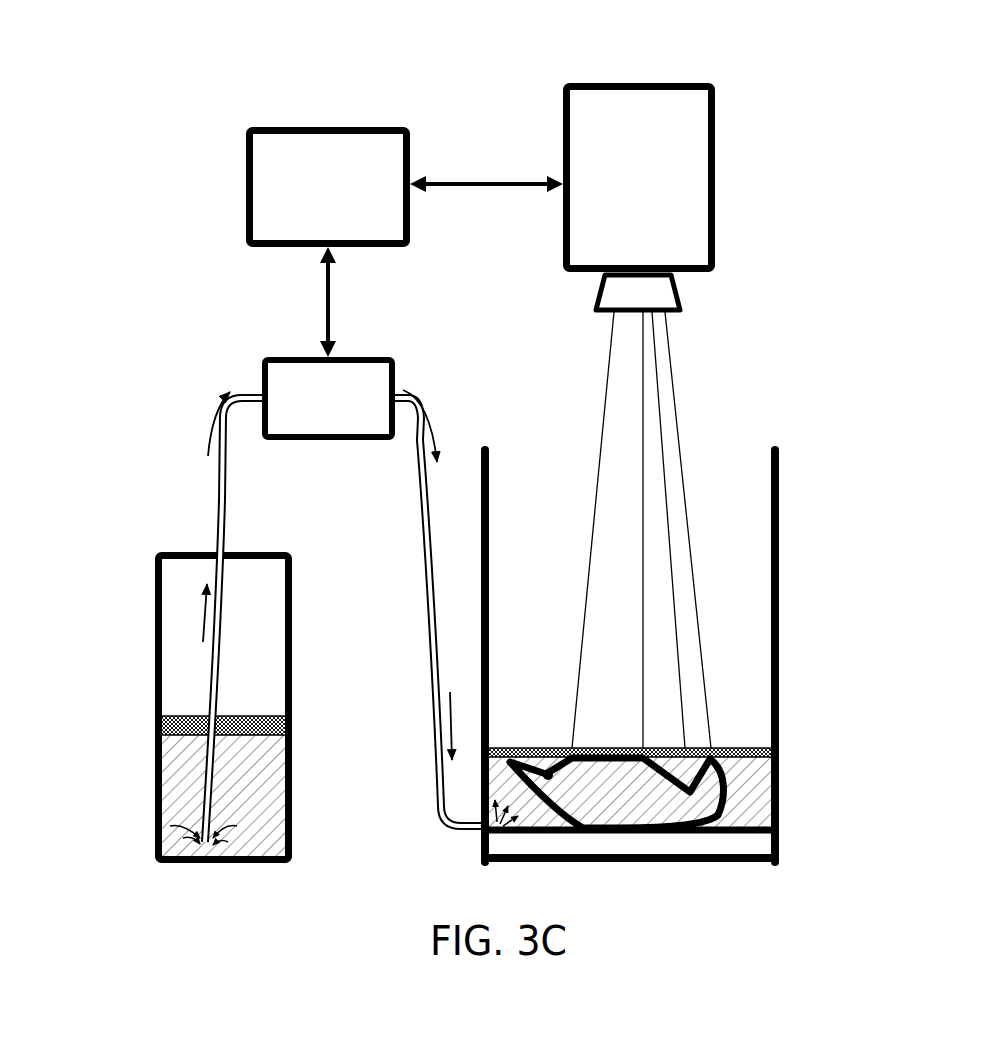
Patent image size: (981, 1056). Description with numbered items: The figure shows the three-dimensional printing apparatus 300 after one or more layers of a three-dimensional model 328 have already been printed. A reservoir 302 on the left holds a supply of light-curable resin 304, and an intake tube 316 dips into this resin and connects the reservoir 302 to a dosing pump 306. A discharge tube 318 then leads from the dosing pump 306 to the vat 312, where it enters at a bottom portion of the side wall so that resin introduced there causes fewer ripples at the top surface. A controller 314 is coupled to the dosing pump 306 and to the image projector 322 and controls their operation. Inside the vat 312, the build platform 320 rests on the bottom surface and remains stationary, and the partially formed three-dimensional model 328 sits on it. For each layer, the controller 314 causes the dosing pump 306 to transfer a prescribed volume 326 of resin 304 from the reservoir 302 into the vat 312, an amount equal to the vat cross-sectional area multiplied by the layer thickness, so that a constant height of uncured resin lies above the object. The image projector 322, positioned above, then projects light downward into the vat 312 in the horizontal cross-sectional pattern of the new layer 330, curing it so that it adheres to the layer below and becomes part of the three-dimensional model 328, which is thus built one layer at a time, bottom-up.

The 3D printing apparatus 300 is at (825, 59).
The reservoir 302 is at (155, 650).
The resin 304 is at (272, 839).
The dosing pump 306 is at (258, 382).
The vat 312 is at (780, 657).
The controller 314 is at (246, 187).
The intake tube 316 is at (220, 508).
The discharge tube 318 is at (425, 548).
The build platform 320 is at (727, 835).
The image projector 322 is at (715, 175).
The volume of resin 326 is at (155, 725).
The three-dimensional model 328 is at (707, 793).
The layer 330 is at (685, 742).